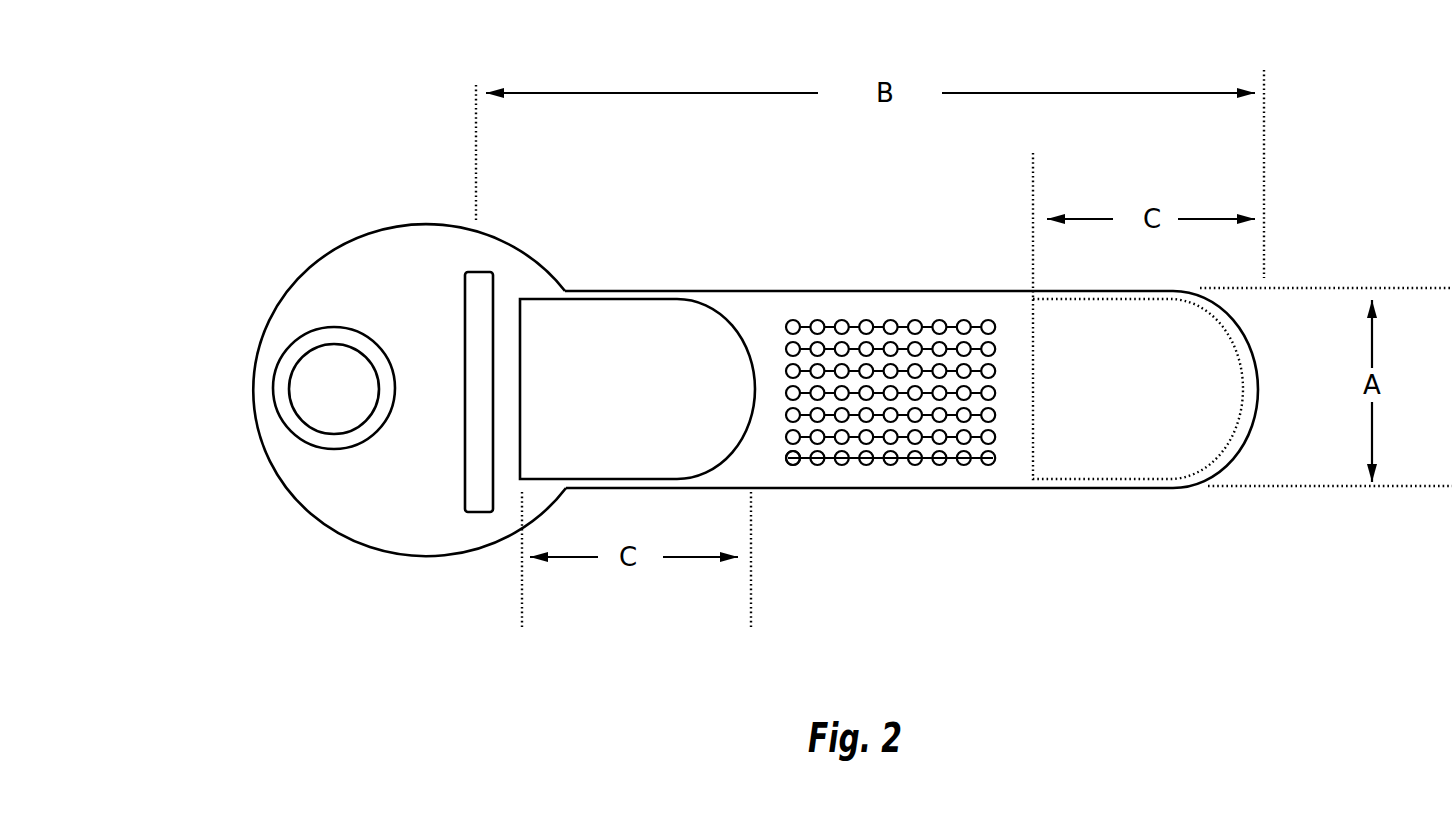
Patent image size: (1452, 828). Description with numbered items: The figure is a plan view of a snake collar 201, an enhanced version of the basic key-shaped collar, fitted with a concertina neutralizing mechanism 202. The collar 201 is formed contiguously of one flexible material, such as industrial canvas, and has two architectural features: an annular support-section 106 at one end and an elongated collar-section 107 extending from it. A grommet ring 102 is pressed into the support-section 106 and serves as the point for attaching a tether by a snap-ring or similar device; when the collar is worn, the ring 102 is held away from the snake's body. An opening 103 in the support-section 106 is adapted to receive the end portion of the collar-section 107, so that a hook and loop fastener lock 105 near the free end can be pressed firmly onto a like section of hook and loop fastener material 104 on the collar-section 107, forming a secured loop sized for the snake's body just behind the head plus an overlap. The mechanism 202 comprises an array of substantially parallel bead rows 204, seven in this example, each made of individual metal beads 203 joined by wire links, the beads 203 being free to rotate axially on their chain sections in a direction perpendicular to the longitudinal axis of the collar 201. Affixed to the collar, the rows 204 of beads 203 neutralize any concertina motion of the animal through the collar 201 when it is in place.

The collar 201 is at (250, 168).
The grommet ring 102 is at (332, 438).
The opening 103 is at (478, 512).
The hook and loop fastener material 104 is at (718, 320).
The hook and loop fastener lock 105 is at (1202, 450).
The annular support-section 106 is at (258, 402).
The collar-section 107 is at (992, 290).
The concertina neutralizing mechanism 202 is at (843, 302).
The beads 203 is at (795, 458).
The bead rows 204 is at (930, 458).